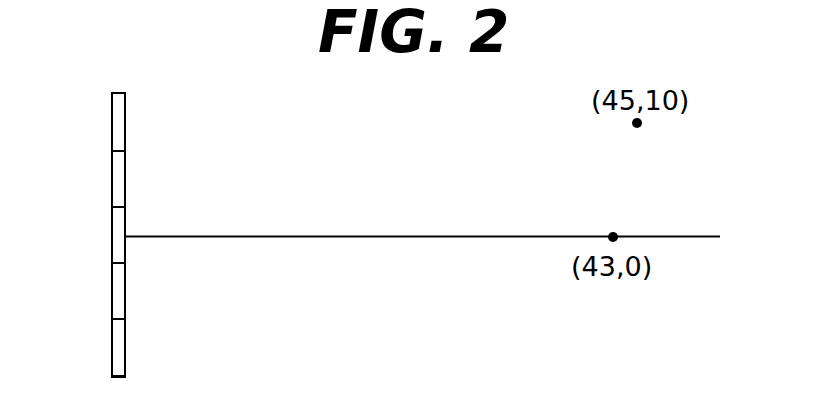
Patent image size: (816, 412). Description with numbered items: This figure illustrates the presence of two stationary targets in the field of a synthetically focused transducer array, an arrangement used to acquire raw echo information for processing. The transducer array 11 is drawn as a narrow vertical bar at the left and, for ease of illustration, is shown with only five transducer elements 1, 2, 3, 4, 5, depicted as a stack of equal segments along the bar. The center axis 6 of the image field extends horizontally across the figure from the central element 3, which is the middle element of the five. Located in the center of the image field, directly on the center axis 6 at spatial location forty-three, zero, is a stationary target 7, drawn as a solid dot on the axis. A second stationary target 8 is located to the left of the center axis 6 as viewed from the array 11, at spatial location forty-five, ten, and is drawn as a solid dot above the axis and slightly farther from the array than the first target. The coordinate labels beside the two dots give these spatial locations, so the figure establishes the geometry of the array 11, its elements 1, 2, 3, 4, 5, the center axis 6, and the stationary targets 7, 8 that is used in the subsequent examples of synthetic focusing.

The transducer element 1 is at (118, 126).
The transducer element 2 is at (118, 183).
The central element 3 is at (118, 237).
The transducer element 4 is at (118, 293).
The transducer element 5 is at (118, 350).
The center axis 6 is at (351, 236).
The stationary target 7 is at (614, 235).
The stationary target 8 is at (640, 125).
The transducer array 11 is at (152, 98).